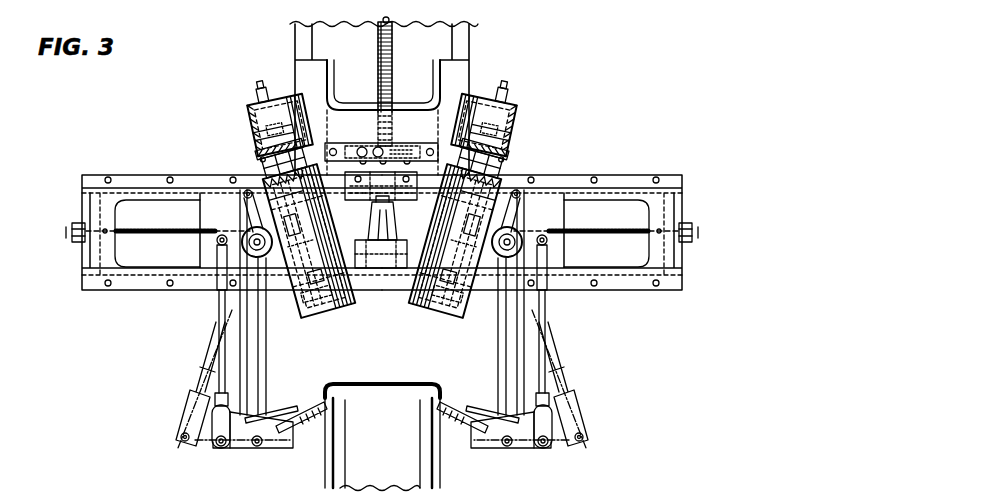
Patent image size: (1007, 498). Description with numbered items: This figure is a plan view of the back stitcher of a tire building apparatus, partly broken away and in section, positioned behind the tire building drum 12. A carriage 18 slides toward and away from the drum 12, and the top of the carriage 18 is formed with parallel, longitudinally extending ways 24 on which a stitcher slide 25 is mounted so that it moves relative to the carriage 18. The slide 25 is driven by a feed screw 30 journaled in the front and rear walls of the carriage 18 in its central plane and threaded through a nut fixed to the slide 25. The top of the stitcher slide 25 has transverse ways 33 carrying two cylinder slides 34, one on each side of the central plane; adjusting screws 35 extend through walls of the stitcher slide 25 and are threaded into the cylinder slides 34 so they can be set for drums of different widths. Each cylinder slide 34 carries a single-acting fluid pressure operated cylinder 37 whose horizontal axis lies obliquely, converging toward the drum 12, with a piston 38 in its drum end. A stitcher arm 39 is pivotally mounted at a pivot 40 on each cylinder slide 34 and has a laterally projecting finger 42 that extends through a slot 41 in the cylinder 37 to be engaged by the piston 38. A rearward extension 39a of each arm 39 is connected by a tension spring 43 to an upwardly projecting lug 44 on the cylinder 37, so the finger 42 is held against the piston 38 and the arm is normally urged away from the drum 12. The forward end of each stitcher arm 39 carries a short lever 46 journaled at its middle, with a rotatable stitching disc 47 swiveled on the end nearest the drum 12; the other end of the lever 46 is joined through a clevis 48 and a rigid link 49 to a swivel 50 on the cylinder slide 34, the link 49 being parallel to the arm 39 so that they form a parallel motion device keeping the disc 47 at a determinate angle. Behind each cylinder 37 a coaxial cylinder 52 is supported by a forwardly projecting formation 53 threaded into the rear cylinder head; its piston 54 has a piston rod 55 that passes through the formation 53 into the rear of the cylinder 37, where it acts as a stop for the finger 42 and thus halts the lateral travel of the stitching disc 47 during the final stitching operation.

The drum 12 is at (347, 470).
The carriage 18 is at (448, 49).
The ways 24 is at (296, 45).
The stitcher slide 25 is at (332, 120).
The feed screw 30 is at (378, 42).
The ways 33 is at (131, 291).
The cylinder slides 34 is at (208, 215).
The adjusting screws 35 is at (128, 238).
The fluid pressure operated cylinders 37 is at (341, 320).
The piston 38 is at (296, 322).
The stitcher arms 39 is at (267, 360).
The rearward extension 39a is at (241, 195).
The pivot 40 is at (254, 236).
The slot 41 is at (500, 193).
The finger 42 is at (330, 230).
The tension spring 43 is at (246, 190).
The lug 44 is at (323, 156).
The lever 46 is at (280, 450).
The stitching disc 47 is at (319, 410).
The clevis 48 is at (212, 446).
The link 49 is at (215, 332).
The swivel 50 is at (216, 258).
The fluid pressure operated cylinders 52 is at (252, 106).
The formation 53 is at (272, 172).
The piston 54 is at (256, 137).
The piston rod 55 is at (428, 160).